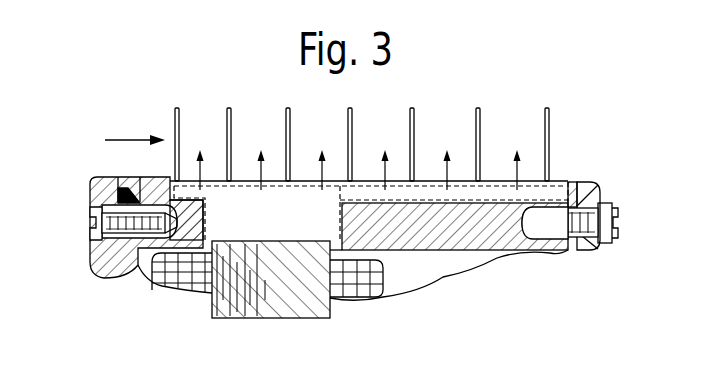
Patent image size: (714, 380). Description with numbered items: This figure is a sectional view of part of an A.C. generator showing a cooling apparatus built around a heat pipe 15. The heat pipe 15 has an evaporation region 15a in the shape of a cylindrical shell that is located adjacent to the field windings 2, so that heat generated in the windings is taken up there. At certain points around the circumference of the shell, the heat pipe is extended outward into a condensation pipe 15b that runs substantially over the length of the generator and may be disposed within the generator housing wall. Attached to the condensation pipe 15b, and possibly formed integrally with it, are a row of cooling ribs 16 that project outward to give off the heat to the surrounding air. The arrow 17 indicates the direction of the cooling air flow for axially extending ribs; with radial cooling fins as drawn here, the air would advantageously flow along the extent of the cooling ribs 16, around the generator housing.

The field windings 2 is at (316, 303).
The heat pipe 15 is at (350, 217).
The evaporation region 15a is at (226, 223).
The condensation pipe 15b is at (553, 192).
The cooling ribs 16 is at (413, 122).
The arrow 17 is at (122, 137).